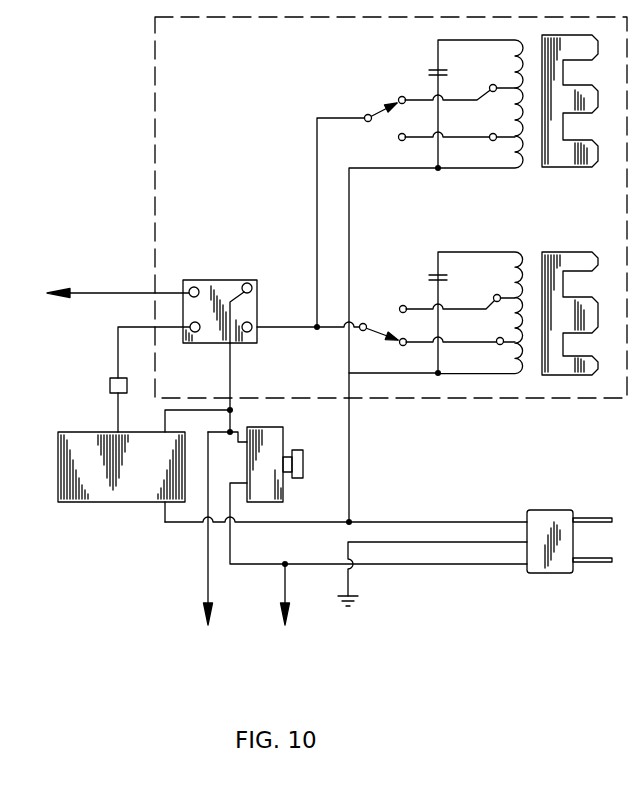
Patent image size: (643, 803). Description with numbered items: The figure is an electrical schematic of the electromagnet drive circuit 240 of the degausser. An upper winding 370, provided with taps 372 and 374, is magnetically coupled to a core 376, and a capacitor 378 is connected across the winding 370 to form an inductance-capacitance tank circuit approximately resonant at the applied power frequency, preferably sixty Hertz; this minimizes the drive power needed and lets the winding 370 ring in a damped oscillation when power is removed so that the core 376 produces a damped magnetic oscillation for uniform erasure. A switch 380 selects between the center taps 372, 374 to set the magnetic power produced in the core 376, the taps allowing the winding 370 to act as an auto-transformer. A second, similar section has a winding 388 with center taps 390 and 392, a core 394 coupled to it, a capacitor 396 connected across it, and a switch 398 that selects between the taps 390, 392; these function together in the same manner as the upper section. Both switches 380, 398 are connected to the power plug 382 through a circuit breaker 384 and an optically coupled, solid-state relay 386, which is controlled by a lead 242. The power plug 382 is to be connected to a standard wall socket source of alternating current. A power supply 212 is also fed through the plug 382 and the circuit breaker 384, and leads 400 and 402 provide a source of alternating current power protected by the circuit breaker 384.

The electromagnet drive circuit 240 is at (155, 78).
The lead 242 is at (110, 292).
The optically coupled, solid-state relay 386 is at (245, 280).
The power supply 212 is at (140, 503).
The circuit breaker 384 is at (270, 431).
The power plug 382 is at (543, 510).
The lead 400 is at (207, 578).
The lead 402 is at (283, 596).
The upper winding 370 is at (490, 170).
The tap 372 is at (491, 87).
The tap 374 is at (503, 128).
The core 376 is at (565, 168).
The capacitor 378 is at (432, 72).
The switch 380 is at (365, 108).
The winding 388 is at (511, 251).
The center tap 390 is at (493, 297).
The center tap 392 is at (500, 344).
The core 394 is at (592, 252).
The capacitor 396 is at (432, 276).
The switch 398 is at (365, 323).